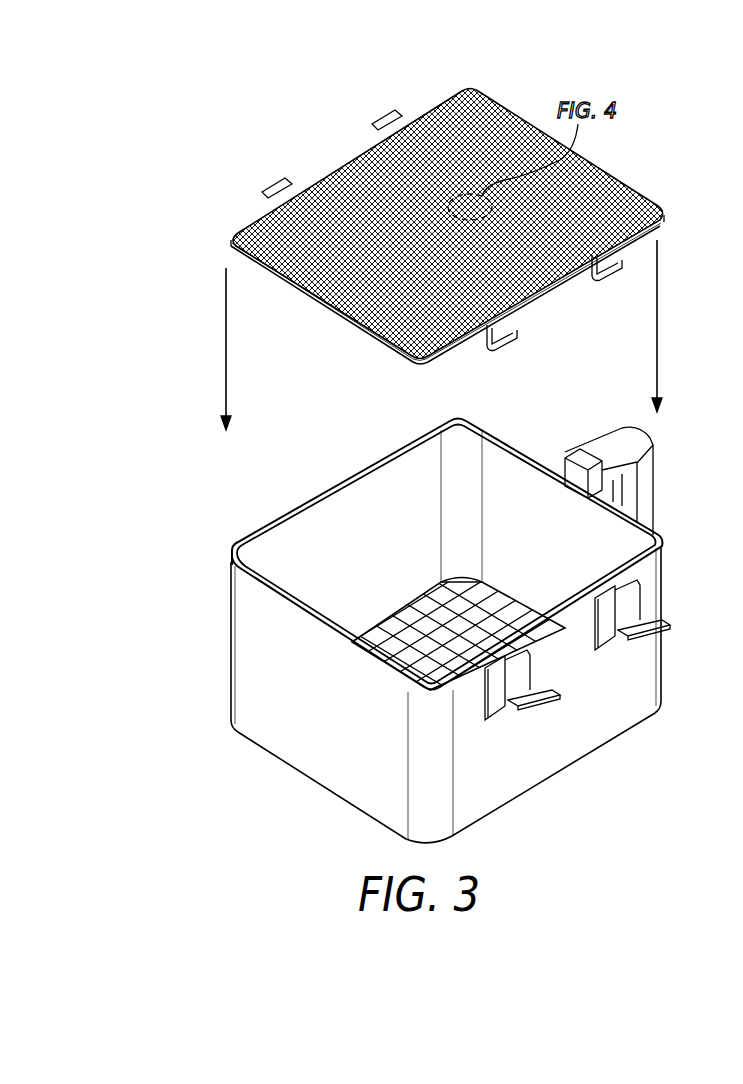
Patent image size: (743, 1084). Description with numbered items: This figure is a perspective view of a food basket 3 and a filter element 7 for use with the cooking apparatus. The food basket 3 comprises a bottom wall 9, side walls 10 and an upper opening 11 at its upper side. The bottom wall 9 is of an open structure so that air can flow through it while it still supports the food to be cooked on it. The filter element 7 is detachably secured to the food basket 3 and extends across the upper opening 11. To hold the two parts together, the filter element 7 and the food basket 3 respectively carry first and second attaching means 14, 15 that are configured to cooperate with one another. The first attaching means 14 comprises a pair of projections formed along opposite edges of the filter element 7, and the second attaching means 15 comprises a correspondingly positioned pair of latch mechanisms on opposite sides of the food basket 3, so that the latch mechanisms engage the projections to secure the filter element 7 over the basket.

The food basket 3 is at (422, 631).
The filter element 7 is at (331, 172).
The bottom wall 9 is at (405, 620).
The side walls 10 is at (308, 758).
The upper opening 11 is at (342, 510).
The first attaching means 14 is at (525, 332).
The second attaching means 15 is at (642, 650).